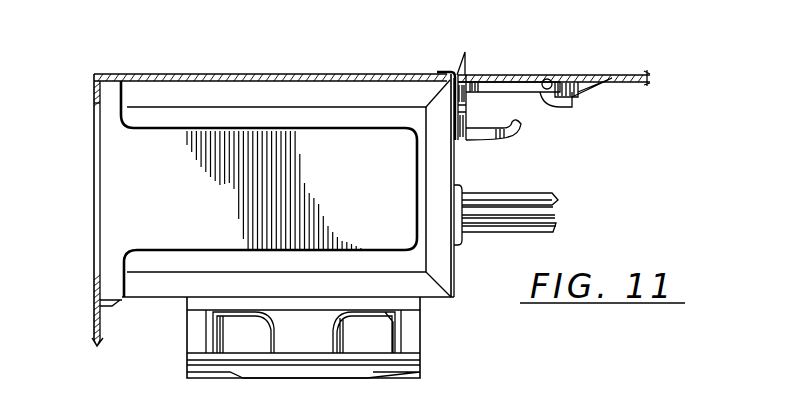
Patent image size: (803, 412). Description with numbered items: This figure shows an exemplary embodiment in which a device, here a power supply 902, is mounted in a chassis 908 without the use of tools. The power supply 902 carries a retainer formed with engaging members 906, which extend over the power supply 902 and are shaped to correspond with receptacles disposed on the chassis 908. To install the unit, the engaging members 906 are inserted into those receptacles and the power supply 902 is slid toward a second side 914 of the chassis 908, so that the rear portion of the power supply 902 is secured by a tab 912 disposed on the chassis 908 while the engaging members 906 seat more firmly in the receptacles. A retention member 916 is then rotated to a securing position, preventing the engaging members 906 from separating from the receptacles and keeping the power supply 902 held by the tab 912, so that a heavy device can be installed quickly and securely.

The power supply 902 is at (447, 268).
The engaging members 906 is at (445, 70).
The chassis 908 is at (565, 77).
The tab 912 is at (98, 306).
The second side 914 is at (95, 140).
The retention member 916 is at (514, 132).